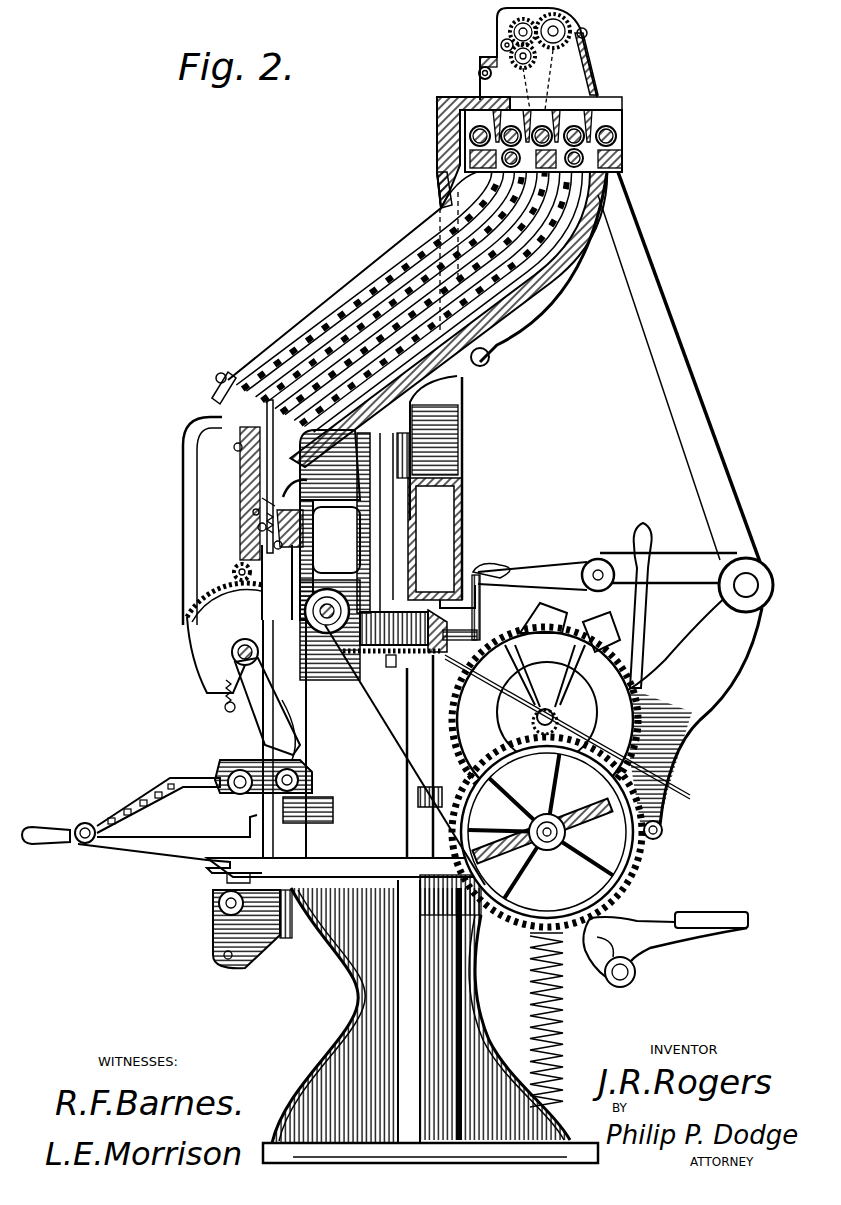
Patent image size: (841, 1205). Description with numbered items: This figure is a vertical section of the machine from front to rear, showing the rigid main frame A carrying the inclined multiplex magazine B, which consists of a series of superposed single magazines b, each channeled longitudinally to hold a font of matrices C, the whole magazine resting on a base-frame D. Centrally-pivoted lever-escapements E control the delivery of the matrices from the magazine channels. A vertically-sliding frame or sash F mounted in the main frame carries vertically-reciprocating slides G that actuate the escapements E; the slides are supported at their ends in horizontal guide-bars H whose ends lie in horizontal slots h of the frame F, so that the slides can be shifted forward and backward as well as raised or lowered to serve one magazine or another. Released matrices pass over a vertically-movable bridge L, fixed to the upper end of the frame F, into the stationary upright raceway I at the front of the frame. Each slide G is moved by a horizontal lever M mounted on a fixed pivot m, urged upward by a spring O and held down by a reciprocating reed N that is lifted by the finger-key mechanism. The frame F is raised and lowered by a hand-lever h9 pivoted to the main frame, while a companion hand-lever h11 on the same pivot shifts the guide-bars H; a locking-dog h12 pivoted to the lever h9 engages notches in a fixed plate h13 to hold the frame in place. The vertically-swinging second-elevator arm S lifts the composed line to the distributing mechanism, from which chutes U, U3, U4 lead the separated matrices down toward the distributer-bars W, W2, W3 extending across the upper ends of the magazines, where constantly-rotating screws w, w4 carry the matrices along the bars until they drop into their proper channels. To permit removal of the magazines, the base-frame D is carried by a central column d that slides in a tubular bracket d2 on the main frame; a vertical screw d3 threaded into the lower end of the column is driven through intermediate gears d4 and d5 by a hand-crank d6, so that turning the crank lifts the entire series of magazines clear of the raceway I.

The main frame A is at (440, 135).
The chute U is at (478, 73).
The escapement gears U3 is at (540, 98).
The escapement spring U4 is at (560, 100).
The distributer-bar W is at (443, 101).
The magazine escapement fingers W2 is at (580, 113).
The magazine escapement fingers W3 is at (600, 122).
The magazine block w4 is at (624, 130).
The carrier-screw w is at (470, 131).
The inclined multiplex magazine B is at (409, 302).
The matrices C is at (306, 330).
The single magazine b is at (405, 298).
The lever-escapement E is at (255, 375).
The bridge L is at (214, 405).
The guide-bar H is at (245, 437).
The horizontal slot h is at (236, 447).
The raceway I is at (200, 468).
The vertically-sliding frame F is at (270, 505).
The actuating slide G is at (258, 528).
The spring O is at (318, 488).
The fixed pivot m is at (336, 540).
The central column d is at (400, 470).
The tubular support d2 is at (426, 543).
The base-frame D is at (432, 383).
The second elevator S is at (660, 304).
The hand-crank d6 is at (547, 605).
The intermediate gear d5 is at (567, 724).
The horizontal lever M is at (242, 572).
The reed N is at (277, 566).
The fixed locking-plate h13 is at (190, 654).
The locking-dog h12 is at (225, 706).
The hand-lever h11 is at (252, 763).
The hand-lever h9 is at (300, 735).
The intermediate gear d4 is at (376, 655).
The vertical screw d3 is at (410, 660).